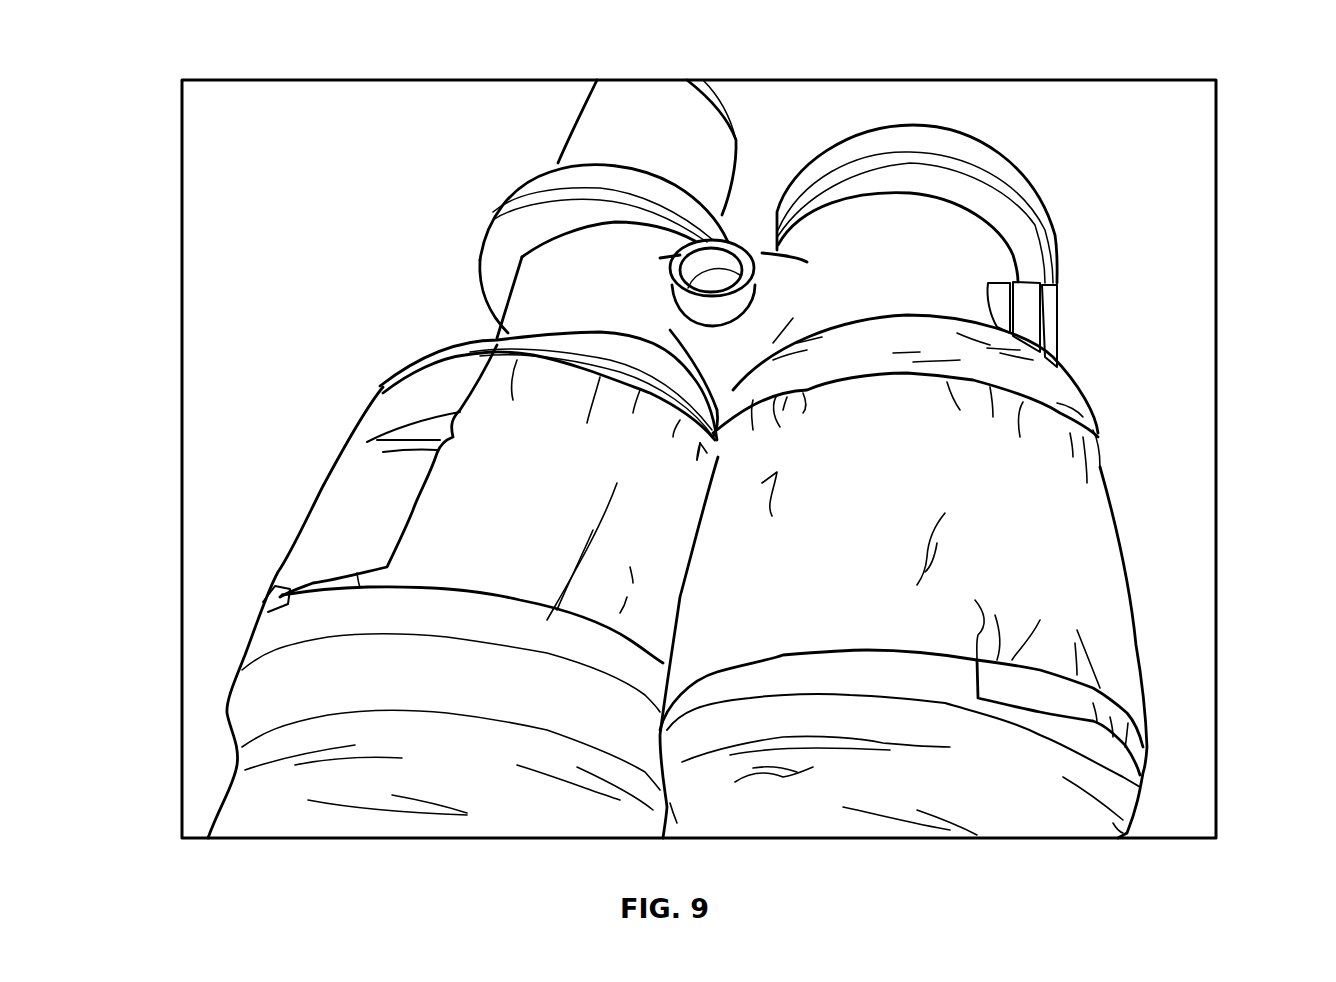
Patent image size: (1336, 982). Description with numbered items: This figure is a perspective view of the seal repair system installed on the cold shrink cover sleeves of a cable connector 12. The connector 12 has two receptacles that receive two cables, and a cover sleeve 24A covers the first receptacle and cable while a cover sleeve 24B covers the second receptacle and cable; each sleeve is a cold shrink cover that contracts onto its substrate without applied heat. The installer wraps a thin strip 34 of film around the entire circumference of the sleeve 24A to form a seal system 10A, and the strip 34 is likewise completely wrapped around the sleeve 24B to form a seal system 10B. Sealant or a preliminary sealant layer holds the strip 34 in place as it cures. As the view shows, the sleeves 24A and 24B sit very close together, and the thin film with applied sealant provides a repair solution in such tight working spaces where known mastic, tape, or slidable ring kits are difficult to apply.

The connector 12 is at (442, 329).
The seal system 10A is at (300, 415).
The seal system 10B is at (1107, 458).
The cover sleeve 24A is at (278, 525).
The cover sleeve 24B is at (1138, 555).
The strip 34 is at (325, 497).